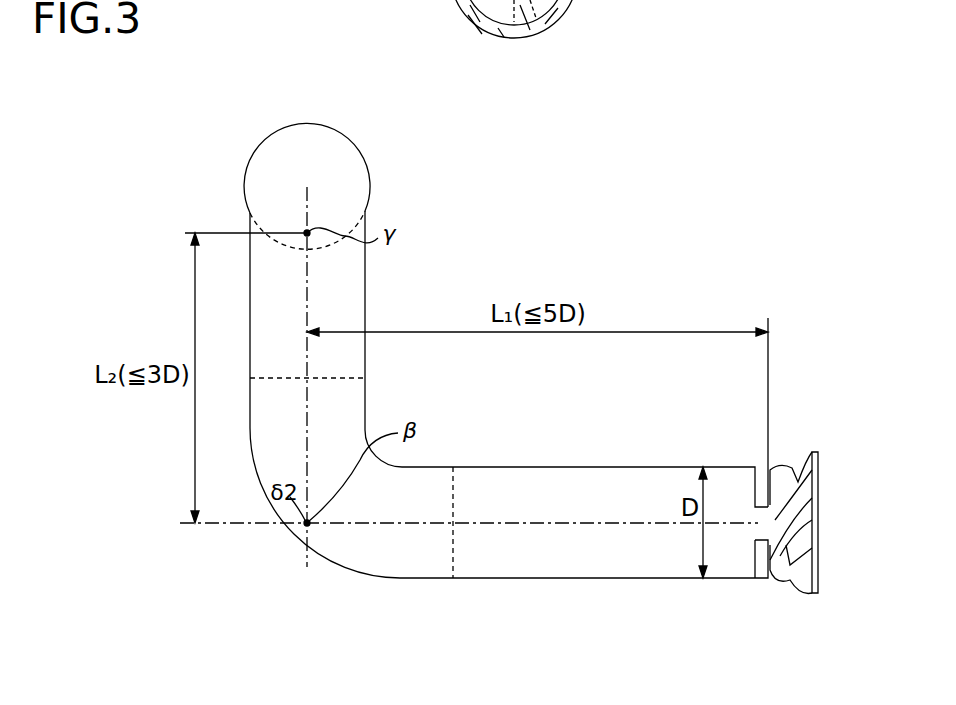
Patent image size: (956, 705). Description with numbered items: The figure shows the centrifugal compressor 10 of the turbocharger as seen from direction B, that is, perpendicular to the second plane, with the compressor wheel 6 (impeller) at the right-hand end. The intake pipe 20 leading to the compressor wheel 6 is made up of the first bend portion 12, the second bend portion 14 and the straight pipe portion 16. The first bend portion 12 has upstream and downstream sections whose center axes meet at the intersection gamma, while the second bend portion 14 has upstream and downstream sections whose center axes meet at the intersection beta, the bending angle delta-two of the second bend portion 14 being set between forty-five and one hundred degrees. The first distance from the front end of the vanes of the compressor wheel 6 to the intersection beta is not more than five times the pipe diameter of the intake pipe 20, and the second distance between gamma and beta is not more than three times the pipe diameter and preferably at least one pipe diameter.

The compressor wheel 6 is at (818, 465).
The centrifugal compressor 10 is at (194, 148).
The first bend portion 12 is at (267, 325).
The second bend portion 14 is at (363, 562).
The straight pipe portion 16 is at (495, 562).
The intake pipe 20 is at (510, 628).